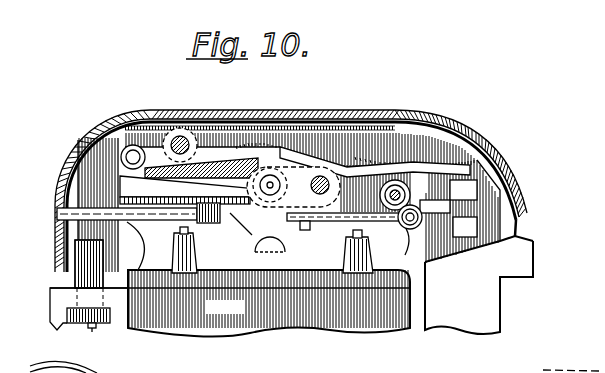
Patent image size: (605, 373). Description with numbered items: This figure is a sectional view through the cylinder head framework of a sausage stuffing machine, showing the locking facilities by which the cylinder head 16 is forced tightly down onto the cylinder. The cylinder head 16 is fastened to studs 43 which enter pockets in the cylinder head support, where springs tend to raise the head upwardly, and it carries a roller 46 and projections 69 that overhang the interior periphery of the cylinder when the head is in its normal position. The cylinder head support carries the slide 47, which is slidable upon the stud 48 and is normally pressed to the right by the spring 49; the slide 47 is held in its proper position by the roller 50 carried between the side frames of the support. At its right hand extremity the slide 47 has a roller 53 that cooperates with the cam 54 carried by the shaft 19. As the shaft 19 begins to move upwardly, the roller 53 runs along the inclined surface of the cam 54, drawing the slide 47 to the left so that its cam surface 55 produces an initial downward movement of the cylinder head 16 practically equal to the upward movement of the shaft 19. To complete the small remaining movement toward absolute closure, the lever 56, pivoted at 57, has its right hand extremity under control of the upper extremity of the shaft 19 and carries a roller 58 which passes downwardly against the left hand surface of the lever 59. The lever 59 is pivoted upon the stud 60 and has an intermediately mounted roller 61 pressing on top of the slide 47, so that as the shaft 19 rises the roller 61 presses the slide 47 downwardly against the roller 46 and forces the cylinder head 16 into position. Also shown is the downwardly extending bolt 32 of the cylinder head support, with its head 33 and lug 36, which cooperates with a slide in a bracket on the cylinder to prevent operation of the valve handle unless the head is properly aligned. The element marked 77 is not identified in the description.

The cylinder head 16 is at (318, 270).
The shaft 19 is at (480, 283).
The bolt 32 is at (75, 280).
The head 33 is at (67, 318).
The lug 36 is at (93, 329).
The studs 43 is at (400, 253).
The roller 46 is at (313, 249).
The slide 47 is at (212, 222).
The stud 48 is at (57, 214).
The spring 49 is at (165, 255).
The roller 50 is at (407, 167).
The roller 53 is at (351, 242).
The cam 54 is at (425, 218).
The cam surface 55 is at (250, 238).
The lever 56 is at (260, 140).
The pivot 57 is at (180, 136).
The roller 58 is at (125, 127).
The lever 59 is at (120, 176).
The stud 60 is at (322, 176).
The roller 61 is at (258, 163).
The projections 69 is at (535, 246).
The base 77 is at (242, 316).